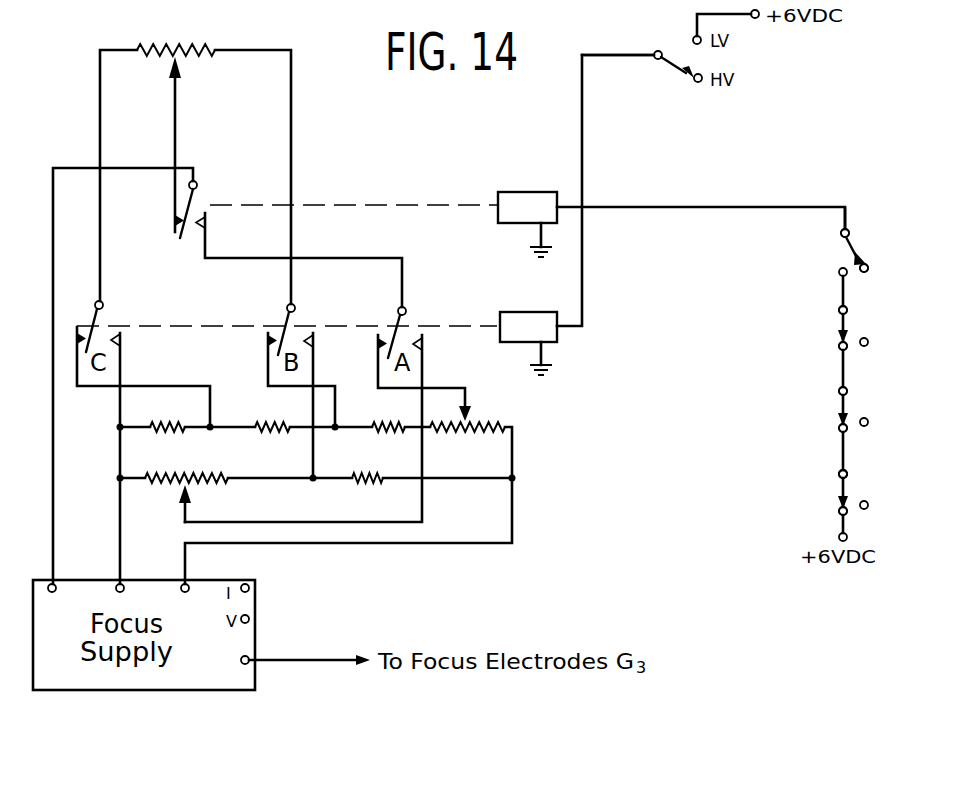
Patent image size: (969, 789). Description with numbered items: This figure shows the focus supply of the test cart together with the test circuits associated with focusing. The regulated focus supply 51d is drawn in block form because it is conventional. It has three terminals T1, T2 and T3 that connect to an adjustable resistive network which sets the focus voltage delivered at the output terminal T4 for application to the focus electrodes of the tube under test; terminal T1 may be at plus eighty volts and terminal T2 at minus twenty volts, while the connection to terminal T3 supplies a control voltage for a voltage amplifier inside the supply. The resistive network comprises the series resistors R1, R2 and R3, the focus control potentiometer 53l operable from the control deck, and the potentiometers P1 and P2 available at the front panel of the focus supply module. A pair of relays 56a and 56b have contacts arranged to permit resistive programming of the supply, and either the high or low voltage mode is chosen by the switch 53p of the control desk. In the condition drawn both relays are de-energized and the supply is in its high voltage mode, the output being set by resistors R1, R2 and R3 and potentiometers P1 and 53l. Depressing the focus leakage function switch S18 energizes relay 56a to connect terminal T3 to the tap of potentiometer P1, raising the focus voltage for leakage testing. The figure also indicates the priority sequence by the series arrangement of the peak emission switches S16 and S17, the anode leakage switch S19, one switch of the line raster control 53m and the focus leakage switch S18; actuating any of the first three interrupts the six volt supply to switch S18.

The focus control potentiometer 53l is at (176, 47).
The high/low voltage mode switch 53p is at (683, 52).
The relay 56a is at (528, 191).
The relay 56b is at (528, 311).
The regulated focus supply 51d is at (249, 584).
The resistor R1 is at (167, 414).
The resistor R2 is at (272, 414).
The resistor R3 is at (388, 414).
The potentiometer P1 is at (468, 418).
The potentiometer P2 is at (178, 497).
The terminal T1 is at (188, 587).
The terminal T2 is at (123, 587).
The terminal T3 is at (54, 587).
The output terminal T4 is at (248, 664).
The focus leakage function switch S18 is at (850, 253).
The line raster switch 53m is at (840, 325).
The anode leakage switch S19 is at (840, 406).
The peak emission switch S16 is at (845, 497).
The peak emission switch S17 is at (699, 501).